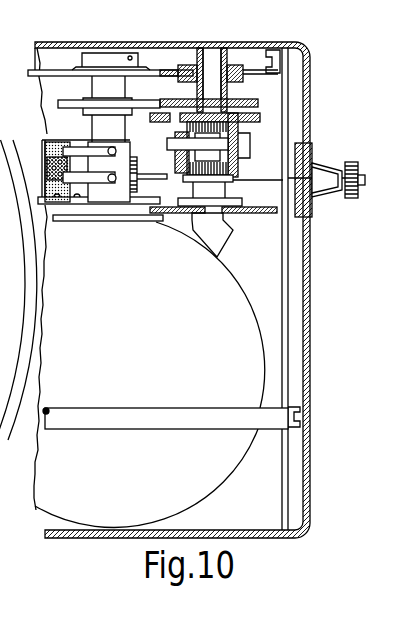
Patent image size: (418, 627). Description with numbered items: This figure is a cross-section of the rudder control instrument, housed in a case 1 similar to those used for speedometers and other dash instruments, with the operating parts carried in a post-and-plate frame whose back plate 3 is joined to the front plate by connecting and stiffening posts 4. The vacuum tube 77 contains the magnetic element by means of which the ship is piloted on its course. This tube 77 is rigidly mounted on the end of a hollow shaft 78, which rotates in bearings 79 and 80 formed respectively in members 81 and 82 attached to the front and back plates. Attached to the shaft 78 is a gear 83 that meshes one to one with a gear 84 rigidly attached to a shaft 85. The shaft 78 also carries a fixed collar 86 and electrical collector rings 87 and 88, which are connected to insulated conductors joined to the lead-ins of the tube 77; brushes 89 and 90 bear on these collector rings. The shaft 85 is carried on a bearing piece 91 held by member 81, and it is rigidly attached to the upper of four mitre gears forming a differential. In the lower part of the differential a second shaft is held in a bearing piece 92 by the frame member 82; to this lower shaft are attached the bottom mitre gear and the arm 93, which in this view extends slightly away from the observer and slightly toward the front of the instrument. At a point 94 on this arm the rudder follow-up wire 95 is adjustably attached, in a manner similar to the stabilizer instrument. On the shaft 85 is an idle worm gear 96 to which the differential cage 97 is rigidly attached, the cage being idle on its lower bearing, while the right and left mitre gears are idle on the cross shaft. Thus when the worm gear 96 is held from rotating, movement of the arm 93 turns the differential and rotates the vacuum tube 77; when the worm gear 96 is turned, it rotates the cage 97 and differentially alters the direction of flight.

The case 1 is at (93, 42).
The back plate 3 is at (287, 264).
The connecting and stiffening posts 4 is at (156, 417).
The vacuum tube 77 is at (149, 287).
The hollow shaft 78 is at (92, 125).
The bearing 79 is at (118, 72).
The bearing 80 is at (118, 221).
The member 81 is at (50, 67).
The member 82 is at (252, 213).
The gear 83 is at (58, 103).
The gear 84 is at (258, 103).
The shaft 85 is at (222, 41).
The fixed collar 86 is at (115, 64).
The electrical collector ring 87 is at (123, 150).
The electrical collector ring 88 is at (118, 181).
The brush 89 is at (88, 157).
The brush 90 is at (78, 152).
The bearing piece 91 is at (212, 58).
The bearing piece 92 is at (235, 238).
The arm 93 is at (158, 180).
The attachment point 94 is at (140, 158).
The rudder follow-up wire 95 is at (265, 180).
The worm gear 96 is at (262, 118).
The differential cage 97 is at (240, 130).